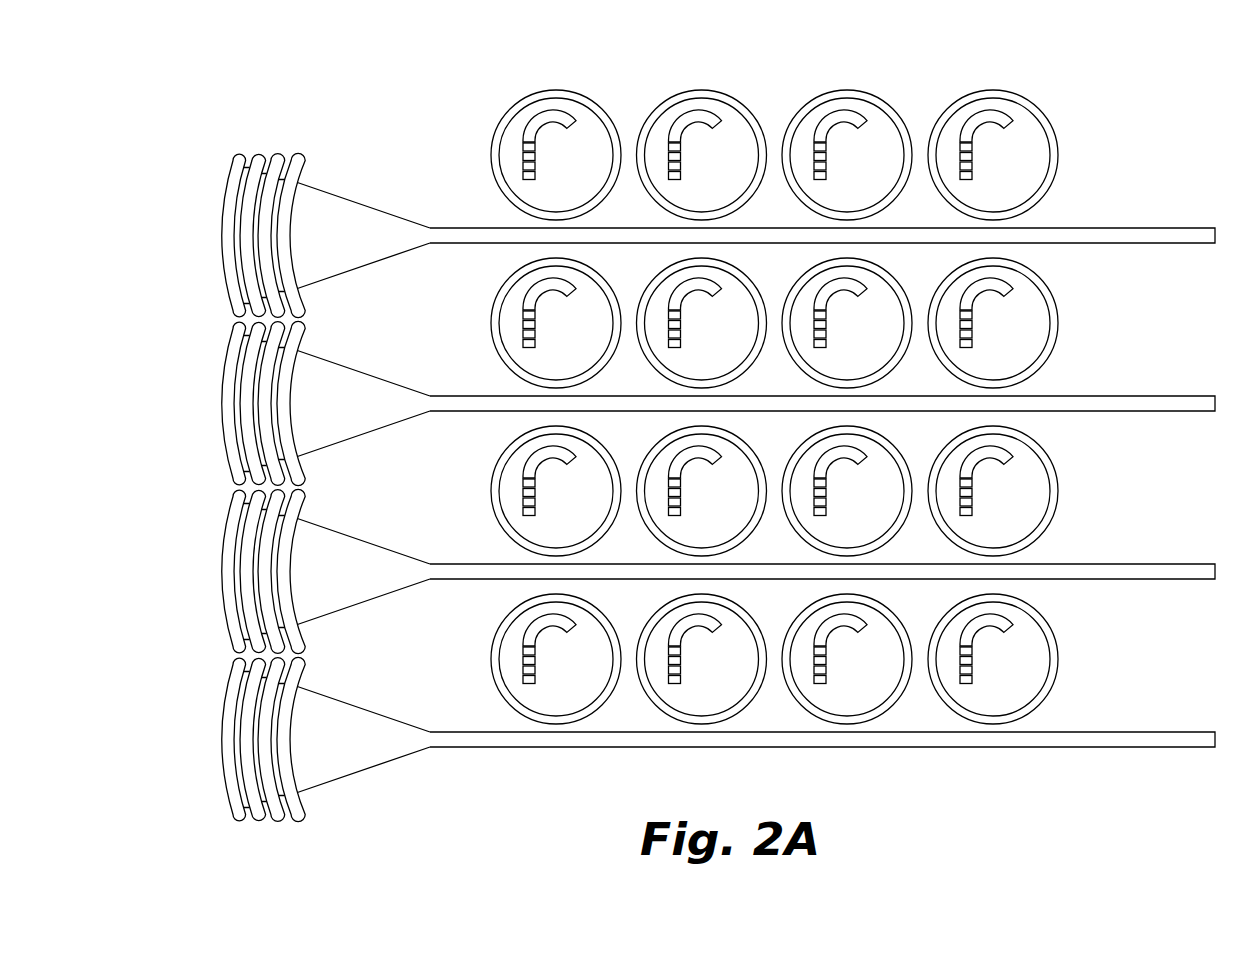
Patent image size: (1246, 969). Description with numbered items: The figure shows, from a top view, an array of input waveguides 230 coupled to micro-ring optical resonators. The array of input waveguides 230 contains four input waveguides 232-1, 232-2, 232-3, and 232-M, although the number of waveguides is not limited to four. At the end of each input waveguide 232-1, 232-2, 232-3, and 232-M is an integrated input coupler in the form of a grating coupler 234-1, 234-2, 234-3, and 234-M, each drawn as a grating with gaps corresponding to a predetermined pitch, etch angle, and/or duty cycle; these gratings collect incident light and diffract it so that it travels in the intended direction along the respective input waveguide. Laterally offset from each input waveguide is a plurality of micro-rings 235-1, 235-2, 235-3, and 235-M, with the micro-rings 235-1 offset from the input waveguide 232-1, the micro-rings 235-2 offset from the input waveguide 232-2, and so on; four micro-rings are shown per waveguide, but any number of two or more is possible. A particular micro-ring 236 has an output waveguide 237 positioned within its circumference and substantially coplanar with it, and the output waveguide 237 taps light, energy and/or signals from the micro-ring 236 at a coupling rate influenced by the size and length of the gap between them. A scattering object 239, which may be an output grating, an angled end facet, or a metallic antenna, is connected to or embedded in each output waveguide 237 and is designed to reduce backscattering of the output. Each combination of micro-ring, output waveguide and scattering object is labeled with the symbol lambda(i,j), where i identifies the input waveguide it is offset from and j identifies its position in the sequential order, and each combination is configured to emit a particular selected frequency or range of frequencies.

The array of input waveguides 230 is at (268, 76).
The input waveguide 232-1 is at (198, 209).
The input waveguide 232-2 is at (193, 403).
The input waveguide 232-3 is at (193, 571).
The input waveguide 232-M is at (192, 739).
The grating coupler 234-1 is at (317, 166).
The grating coupler 234-2 is at (363, 386).
The grating coupler 234-3 is at (363, 553).
The grating coupler 234-M is at (364, 721).
The plurality of micro-rings 235-1 is at (1093, 163).
The plurality of micro-rings 235-2 is at (822, 362).
The plurality of micro-rings 235-3 is at (822, 530).
The plurality of micro-rings 235-M is at (824, 696).
The micro-ring 236 is at (585, 95).
The output waveguide 237 is at (552, 108).
The scattering object 239 is at (520, 158).